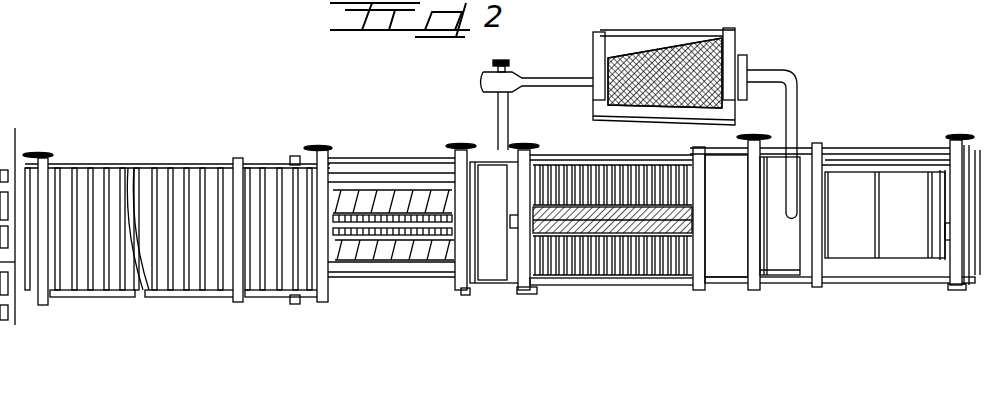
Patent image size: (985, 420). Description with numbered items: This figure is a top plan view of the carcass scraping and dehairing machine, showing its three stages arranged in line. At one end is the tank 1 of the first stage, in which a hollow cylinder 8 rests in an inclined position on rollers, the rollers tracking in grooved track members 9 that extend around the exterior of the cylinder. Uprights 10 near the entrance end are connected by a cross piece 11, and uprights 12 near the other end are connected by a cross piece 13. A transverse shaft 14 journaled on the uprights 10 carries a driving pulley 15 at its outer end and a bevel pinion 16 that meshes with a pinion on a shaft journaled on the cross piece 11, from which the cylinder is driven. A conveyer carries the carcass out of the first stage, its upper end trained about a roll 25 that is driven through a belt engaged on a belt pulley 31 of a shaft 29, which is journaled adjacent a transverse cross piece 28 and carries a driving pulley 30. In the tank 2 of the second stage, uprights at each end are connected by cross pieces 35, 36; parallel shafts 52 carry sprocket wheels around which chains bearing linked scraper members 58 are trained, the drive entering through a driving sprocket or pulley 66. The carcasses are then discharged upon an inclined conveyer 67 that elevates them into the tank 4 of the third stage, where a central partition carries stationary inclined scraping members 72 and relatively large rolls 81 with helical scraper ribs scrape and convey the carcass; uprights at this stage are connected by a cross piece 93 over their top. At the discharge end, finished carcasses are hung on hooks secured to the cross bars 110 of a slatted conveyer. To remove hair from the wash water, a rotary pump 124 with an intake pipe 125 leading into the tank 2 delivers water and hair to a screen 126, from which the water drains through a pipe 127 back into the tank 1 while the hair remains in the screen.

The tank 1 is at (867, 153).
The tank 2 is at (617, 158).
The tank 4 is at (383, 166).
The hollow cylinder 8 is at (885, 215).
The track members 9 is at (879, 207).
The uprights 10 is at (956, 140).
The cross piece 11 is at (950, 158).
The uprights 12 is at (815, 145).
The cross piece 13 is at (822, 165).
The transverse shaft 14 is at (975, 202).
The driving pulley 15 is at (966, 140).
The bevel pinion 16 is at (960, 229).
The roll 25 is at (780, 259).
The transverse cross piece 28 is at (726, 216).
The shaft 29 is at (763, 228).
The driving pulley 30 is at (755, 135).
The belt pulley 31 is at (780, 216).
The cross pieces 35 is at (698, 172).
The cross pieces 36 is at (530, 292).
The parallel shafts 52 is at (553, 172).
The linked scraper members 58 is at (680, 240).
The driving sprocket or pulley 66 is at (394, 250).
The inclined conveyer 67 is at (496, 222).
The stationary inclined scraping members 72 is at (392, 201).
The rolls 81 is at (392, 228).
The cross piece 93 is at (461, 295).
The cross bars 110 is at (152, 170).
The rotary pump 124 is at (481, 82).
The intake pipe 125 is at (509, 117).
The screen 126 is at (664, 67).
The pipe 127 is at (786, 80).